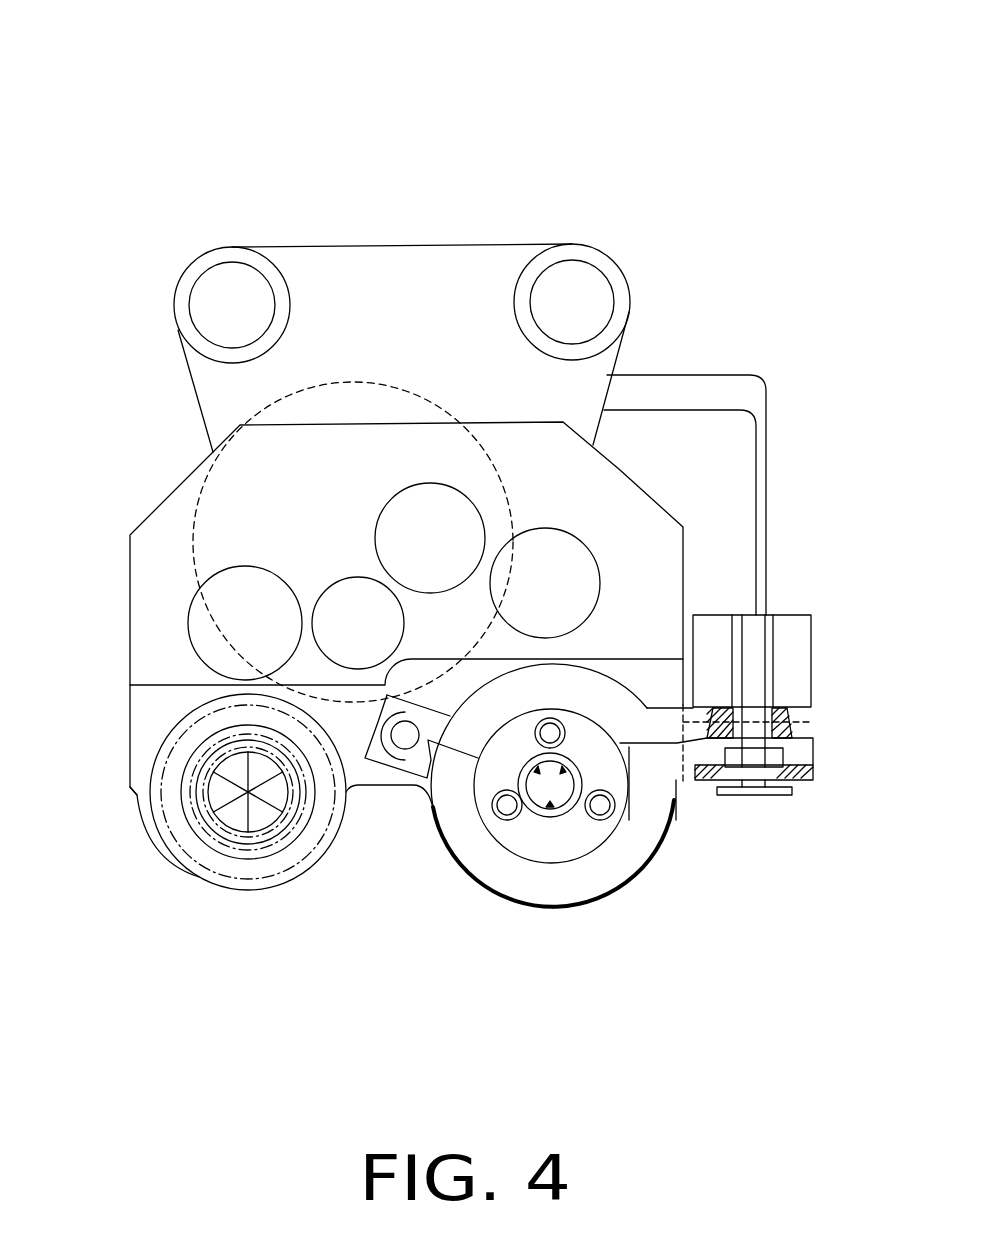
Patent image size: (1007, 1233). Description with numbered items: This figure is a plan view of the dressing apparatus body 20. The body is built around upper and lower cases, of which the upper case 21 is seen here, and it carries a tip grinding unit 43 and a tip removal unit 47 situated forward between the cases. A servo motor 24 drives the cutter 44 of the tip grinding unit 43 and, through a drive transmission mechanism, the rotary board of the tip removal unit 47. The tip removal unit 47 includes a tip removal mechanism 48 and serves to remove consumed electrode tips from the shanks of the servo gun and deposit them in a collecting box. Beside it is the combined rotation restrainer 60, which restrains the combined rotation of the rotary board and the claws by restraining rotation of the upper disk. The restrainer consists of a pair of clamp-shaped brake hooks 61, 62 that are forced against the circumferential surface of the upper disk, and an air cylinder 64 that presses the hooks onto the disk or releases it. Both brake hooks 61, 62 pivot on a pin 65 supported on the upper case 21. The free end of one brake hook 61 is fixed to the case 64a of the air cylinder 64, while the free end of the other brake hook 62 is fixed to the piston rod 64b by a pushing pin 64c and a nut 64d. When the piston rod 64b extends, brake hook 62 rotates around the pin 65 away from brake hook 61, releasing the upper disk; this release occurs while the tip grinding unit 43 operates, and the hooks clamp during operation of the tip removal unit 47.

The dressing apparatus body 20 is at (360, 205).
The upper case 21 is at (141, 607).
The servo motor 24 is at (432, 398).
The tip grinding unit 43 is at (251, 897).
The cutter 44 is at (231, 803).
The tip removal unit 47 is at (556, 912).
The tip removal mechanism 48 is at (584, 849).
The combined rotation restrainer 60 is at (692, 797).
The brake hook 61 is at (472, 738).
The brake hook 62 is at (495, 878).
The air cylinder 64 is at (790, 578).
The case 64a is at (803, 647).
The piston rod 64b is at (797, 735).
The pushing pin 64c is at (754, 789).
The nut 64d is at (788, 797).
The pin 65 is at (404, 740).